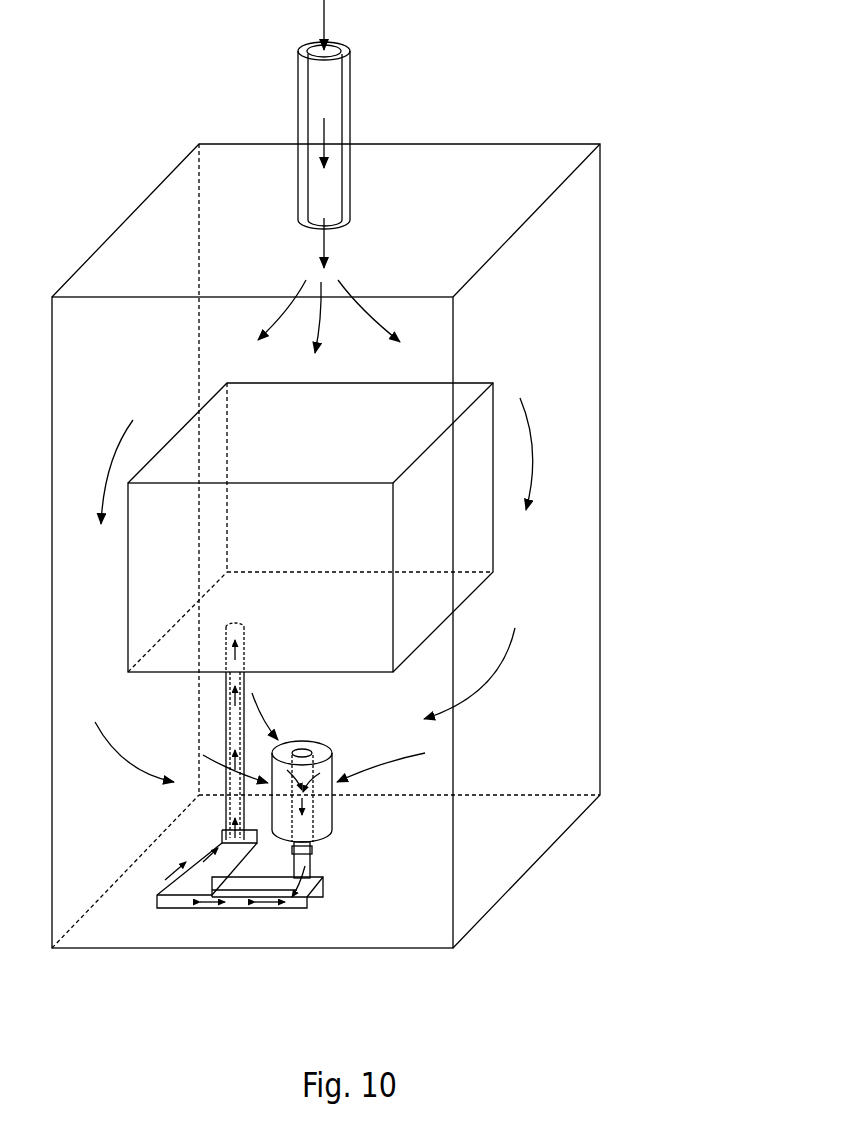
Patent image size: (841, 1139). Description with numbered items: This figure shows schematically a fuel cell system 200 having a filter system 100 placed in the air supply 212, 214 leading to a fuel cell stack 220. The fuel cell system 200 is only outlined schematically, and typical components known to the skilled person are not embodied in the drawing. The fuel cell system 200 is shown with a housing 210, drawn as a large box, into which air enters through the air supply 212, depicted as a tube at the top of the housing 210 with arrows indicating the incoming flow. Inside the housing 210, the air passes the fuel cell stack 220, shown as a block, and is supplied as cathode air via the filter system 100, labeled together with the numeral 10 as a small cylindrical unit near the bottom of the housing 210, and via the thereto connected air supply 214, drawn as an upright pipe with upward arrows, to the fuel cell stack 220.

The fuel cell system 200 is at (635, 160).
The housing 210 is at (600, 470).
The air supply 212 is at (352, 86).
The air supply 214 is at (226, 708).
The fuel cell stack 220 is at (493, 543).
The sensor 10 is at (357, 819).
The filter system 100 is at (332, 815).